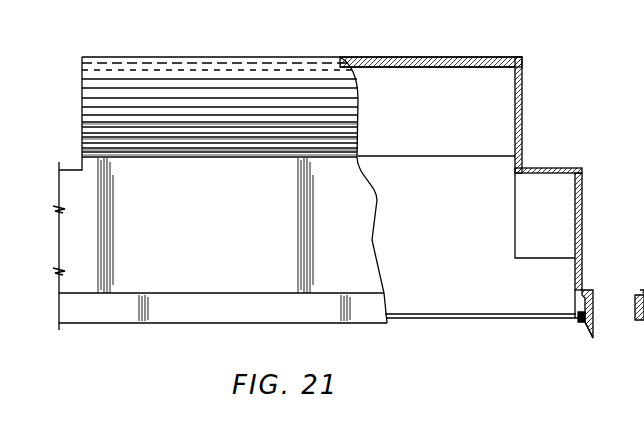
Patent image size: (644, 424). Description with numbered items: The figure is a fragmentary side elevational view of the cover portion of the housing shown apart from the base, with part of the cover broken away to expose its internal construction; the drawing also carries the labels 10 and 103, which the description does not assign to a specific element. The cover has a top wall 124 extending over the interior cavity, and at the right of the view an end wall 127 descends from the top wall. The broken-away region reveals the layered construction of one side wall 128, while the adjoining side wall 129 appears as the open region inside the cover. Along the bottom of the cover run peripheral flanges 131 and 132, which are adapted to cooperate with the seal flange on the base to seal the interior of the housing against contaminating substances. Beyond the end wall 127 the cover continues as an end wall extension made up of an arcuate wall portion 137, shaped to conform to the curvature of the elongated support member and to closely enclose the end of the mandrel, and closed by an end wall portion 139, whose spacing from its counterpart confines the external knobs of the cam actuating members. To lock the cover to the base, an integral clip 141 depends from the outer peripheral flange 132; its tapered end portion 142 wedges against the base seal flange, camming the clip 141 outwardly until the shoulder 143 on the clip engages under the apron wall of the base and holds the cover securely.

The container section 10 is at (636, 58).
The wall assembly 103 is at (528, 106).
The top wall 124 is at (416, 62).
The end wall 127 is at (523, 128).
The side wall 128 is at (243, 210).
The side wall 129 is at (453, 123).
The peripheral flange 131 is at (574, 307).
The peripheral flange 132 is at (235, 321).
The arcuate wall portion 137 is at (551, 168).
The end wall portion 139 is at (583, 216).
The clip 141 is at (592, 305).
The tapered end portion 142 is at (586, 330).
The shoulder 143 is at (577, 321).